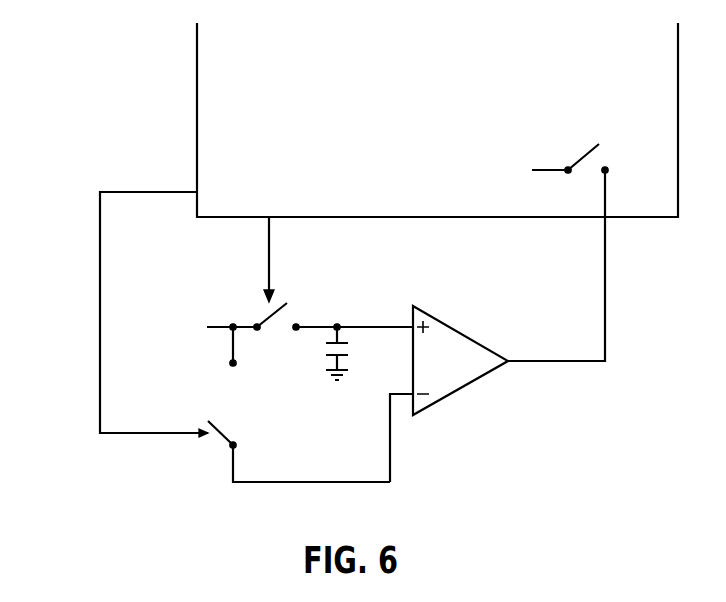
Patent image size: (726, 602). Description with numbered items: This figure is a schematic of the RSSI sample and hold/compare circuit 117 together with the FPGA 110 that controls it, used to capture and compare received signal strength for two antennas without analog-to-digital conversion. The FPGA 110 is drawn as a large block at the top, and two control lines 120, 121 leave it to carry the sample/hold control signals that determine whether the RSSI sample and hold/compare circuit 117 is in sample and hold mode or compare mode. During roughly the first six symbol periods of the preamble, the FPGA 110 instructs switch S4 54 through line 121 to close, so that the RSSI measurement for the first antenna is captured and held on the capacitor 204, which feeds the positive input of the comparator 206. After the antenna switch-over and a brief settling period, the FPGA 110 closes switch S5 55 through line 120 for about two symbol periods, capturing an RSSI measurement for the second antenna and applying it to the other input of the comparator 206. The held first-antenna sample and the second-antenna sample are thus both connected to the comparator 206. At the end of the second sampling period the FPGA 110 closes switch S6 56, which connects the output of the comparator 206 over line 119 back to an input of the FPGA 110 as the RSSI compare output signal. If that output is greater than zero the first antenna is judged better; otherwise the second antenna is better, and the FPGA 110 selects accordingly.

The FPGA 110 is at (258, 93).
The line 120 is at (100, 230).
The line 121 is at (270, 257).
The switch S4 54 is at (272, 331).
The capacitor 204 is at (362, 327).
The comparator 206 is at (452, 326).
The switch S6 56 is at (570, 171).
The line 119 is at (606, 253).
The switch S5 55 is at (290, 451).
The RSSI sample and hold/compare circuit 117 is at (456, 476).